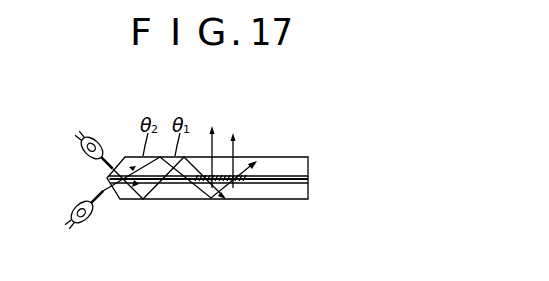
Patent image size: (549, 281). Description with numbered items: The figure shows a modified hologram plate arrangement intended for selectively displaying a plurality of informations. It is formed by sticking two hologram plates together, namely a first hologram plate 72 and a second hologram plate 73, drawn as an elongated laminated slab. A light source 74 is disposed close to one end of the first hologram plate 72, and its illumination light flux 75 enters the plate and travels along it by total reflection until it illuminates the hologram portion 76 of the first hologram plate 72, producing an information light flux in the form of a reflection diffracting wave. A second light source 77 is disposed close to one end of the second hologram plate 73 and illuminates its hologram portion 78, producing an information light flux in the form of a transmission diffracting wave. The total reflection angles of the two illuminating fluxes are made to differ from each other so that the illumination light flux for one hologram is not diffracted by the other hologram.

The first hologram plate 72 is at (308, 169).
The second hologram plate 73 is at (308, 196).
The light source 74 is at (98, 138).
The illumination light flux 75 is at (200, 154).
The hologram portion 76 is at (238, 152).
The light source 77 is at (88, 222).
The hologram portion 78 is at (245, 187).